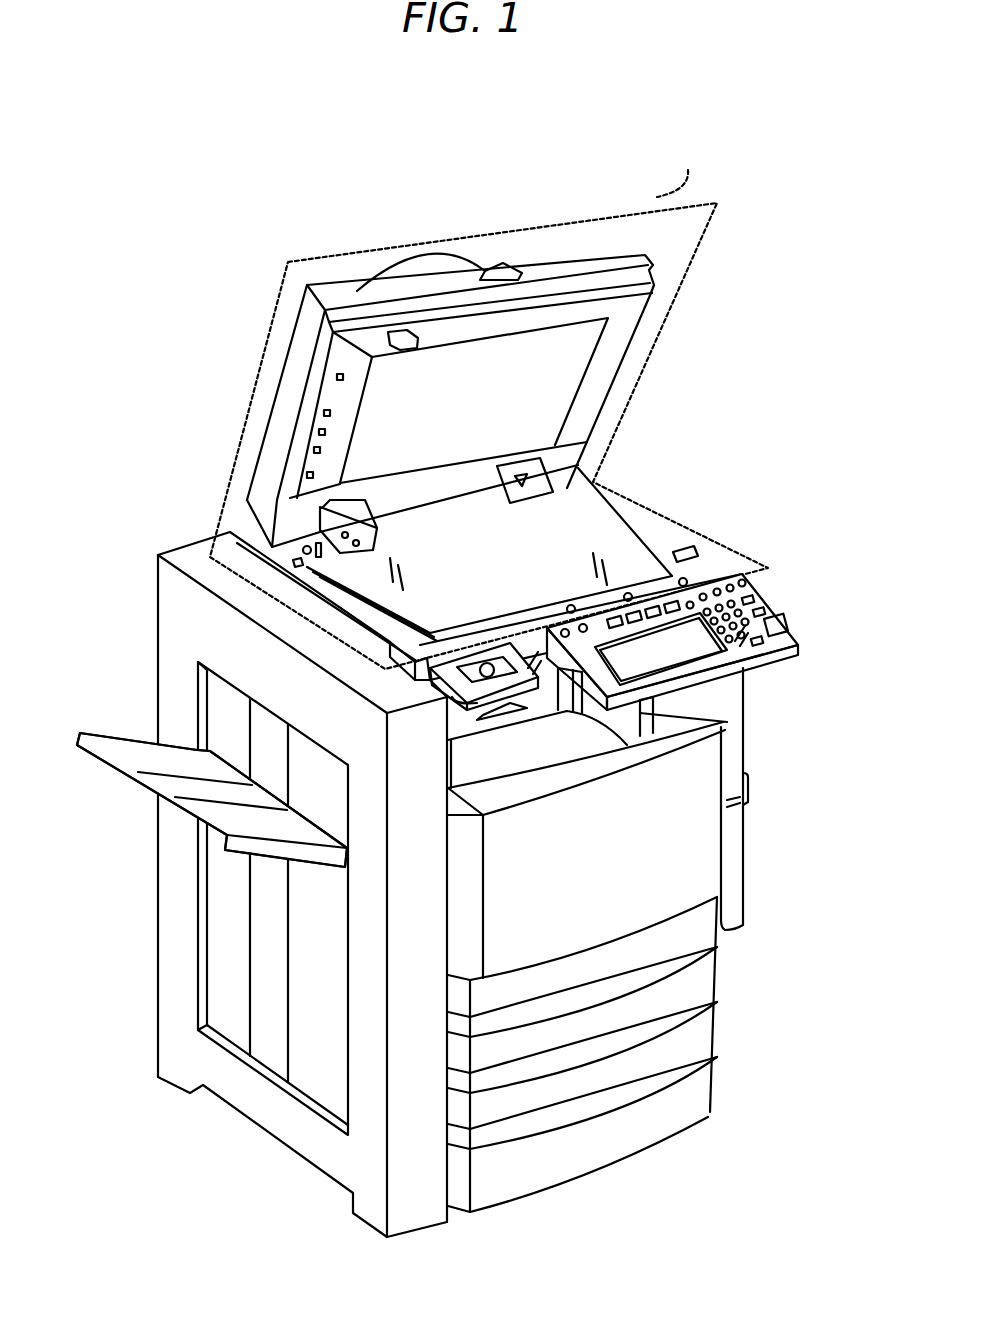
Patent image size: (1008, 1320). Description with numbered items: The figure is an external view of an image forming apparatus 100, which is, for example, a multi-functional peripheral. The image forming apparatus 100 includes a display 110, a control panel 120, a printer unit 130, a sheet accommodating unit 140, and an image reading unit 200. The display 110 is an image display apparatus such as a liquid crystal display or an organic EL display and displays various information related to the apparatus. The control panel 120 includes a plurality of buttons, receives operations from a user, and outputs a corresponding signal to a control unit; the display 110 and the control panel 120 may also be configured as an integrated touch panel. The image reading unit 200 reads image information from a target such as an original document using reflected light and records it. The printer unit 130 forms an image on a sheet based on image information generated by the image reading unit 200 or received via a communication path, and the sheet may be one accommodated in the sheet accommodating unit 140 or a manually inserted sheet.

The image forming apparatus 100 is at (500, 168).
The display 110 is at (687, 630).
The control panel 120 is at (777, 625).
The printer unit 130 is at (698, 876).
The sheet accommodating unit 140 is at (728, 935).
The image reading unit 200 is at (489, 402).